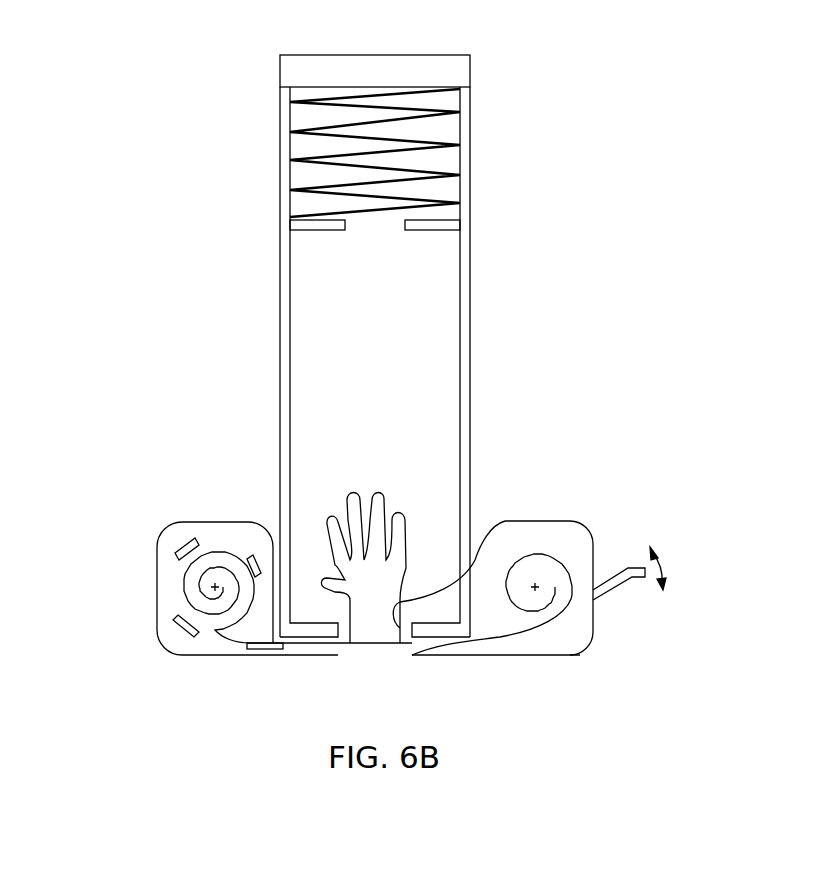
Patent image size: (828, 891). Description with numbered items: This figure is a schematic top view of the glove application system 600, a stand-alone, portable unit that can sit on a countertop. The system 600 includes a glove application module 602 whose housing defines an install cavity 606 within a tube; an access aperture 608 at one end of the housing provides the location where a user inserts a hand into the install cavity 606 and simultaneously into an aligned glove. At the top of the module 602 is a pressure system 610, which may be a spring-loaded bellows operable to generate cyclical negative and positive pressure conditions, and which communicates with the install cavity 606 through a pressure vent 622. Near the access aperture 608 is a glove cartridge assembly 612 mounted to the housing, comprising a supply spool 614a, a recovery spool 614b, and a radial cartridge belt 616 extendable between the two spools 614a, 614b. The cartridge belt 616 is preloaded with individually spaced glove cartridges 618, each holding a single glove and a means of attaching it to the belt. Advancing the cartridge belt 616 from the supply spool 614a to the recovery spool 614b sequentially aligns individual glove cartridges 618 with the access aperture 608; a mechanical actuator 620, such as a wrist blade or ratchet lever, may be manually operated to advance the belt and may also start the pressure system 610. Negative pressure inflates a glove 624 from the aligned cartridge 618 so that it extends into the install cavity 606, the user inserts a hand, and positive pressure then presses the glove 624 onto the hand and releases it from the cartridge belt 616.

The glove application system 600 is at (198, 162).
The glove application module 602 is at (281, 327).
The install cavity 606 is at (397, 386).
The access aperture 608 is at (475, 560).
The pressure system 610 is at (447, 157).
The glove cartridge assembly 612 is at (161, 533).
The supply spool 614a is at (180, 590).
The recovery spool 614b is at (563, 566).
The cartridge belt 616 is at (305, 651).
The glove cartridge 618 is at (189, 546).
The mechanical actuator 620 is at (616, 586).
The pressure vent 622 is at (407, 225).
The glove 624 is at (412, 512).